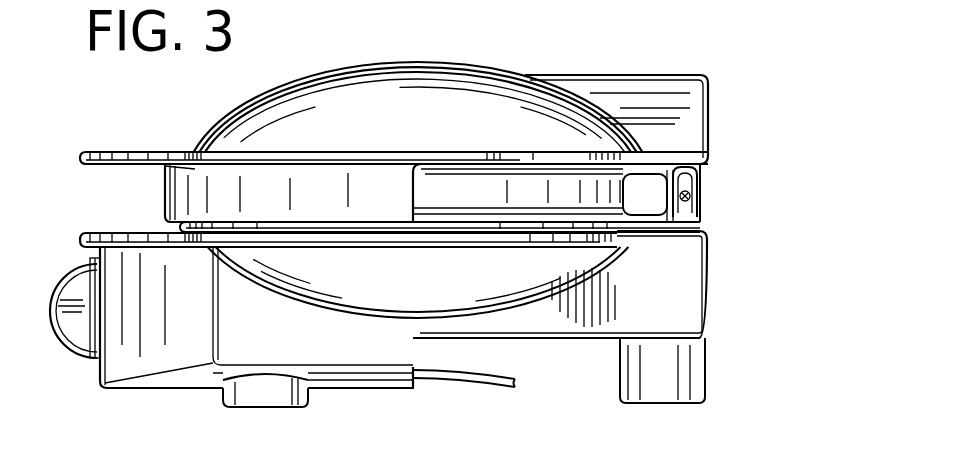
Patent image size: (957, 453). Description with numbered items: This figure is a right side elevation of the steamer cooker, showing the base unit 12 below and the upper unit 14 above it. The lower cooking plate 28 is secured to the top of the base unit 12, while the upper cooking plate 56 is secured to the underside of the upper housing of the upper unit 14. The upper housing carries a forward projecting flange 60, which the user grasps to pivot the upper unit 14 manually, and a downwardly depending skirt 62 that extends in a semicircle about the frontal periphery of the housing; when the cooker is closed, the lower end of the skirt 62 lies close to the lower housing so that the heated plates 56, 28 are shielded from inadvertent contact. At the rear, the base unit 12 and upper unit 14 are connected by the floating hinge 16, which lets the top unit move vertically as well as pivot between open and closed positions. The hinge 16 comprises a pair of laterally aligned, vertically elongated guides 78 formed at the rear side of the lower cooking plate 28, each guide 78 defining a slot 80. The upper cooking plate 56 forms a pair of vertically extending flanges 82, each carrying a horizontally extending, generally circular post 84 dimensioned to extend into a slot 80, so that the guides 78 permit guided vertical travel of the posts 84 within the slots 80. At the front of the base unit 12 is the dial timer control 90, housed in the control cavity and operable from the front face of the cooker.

The base unit 12 is at (721, 313).
The upper unit 14 is at (712, 108).
The floating hinge 16 is at (713, 190).
The lower cooking plate 28 is at (645, 232).
The upper cooking plate 56 is at (653, 152).
The forward projecting flange 60 is at (115, 152).
The downwardly depending skirt 62 is at (165, 189).
The vertically elongated guides 78 is at (700, 180).
The slot 80 is at (698, 208).
The vertically extending flanges 82 is at (645, 180).
The circular post 84 is at (689, 210).
The dial timer control 90 is at (48, 313).